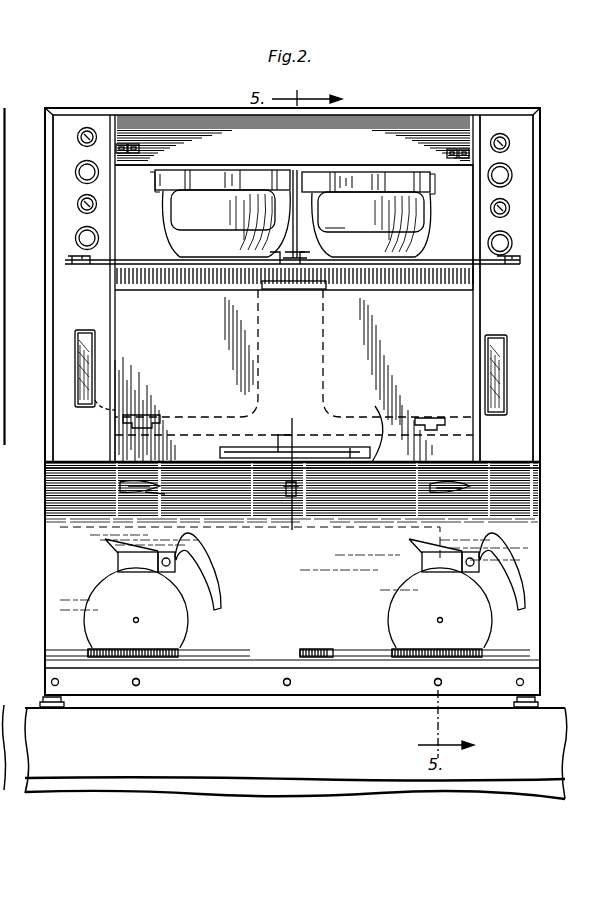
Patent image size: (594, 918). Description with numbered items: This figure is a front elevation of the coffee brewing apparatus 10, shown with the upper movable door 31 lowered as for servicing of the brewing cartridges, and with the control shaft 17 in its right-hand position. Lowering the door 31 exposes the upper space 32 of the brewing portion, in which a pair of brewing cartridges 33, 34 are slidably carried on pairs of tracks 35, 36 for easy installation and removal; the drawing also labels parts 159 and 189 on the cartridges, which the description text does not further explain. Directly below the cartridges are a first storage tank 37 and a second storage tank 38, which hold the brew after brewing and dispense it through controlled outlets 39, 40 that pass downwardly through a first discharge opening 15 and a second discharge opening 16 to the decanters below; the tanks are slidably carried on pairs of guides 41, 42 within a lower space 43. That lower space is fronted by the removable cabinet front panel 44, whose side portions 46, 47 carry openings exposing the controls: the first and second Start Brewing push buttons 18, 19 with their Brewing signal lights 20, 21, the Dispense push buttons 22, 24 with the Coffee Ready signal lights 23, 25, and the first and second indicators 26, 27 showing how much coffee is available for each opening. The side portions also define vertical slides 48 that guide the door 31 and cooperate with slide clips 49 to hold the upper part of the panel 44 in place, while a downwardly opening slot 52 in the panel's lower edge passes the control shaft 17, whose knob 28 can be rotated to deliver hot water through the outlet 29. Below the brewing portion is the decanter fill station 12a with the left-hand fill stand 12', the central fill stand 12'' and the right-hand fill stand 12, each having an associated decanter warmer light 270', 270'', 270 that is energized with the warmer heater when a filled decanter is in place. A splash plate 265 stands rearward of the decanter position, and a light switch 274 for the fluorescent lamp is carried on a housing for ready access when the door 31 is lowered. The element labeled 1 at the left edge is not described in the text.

The adjacent machine 1 is at (7, 433).
The coffee brewing apparatus 10 is at (546, 265).
The fill stand 12 is at (292, 672).
The left-hand fill stand 12' is at (158, 636).
The central fill stand 12'' is at (323, 634).
The decanter fill station 12a is at (468, 680).
The first discharge opening 15 is at (155, 489).
The second discharge opening 16 is at (0, 488).
The control shaft 17 is at (367, 462).
The first Start Brewing push button 18 is at (74, 176).
The second Start Brewing push button 19 is at (511, 174).
The Brewing signal light 20 is at (77, 145).
The second Brewing signal light 21 is at (509, 143).
The Dispense push button 22 is at (74, 241).
The Coffee Ready signal light 23 is at (76, 208).
The second Dispense push button 24 is at (514, 243).
The second Coffee Ready signal light 25 is at (512, 210).
The first indicator 26 is at (85, 408).
The second indicator 27 is at (0, 359).
The knob 28 is at (366, 429).
The outlet 29 is at (288, 495).
The movable door 31 is at (180, 291).
The upper space 32 is at (452, 209).
The brewing cartridge 33 is at (166, 205).
The second brewing cartridge 34 is at (404, 234).
The pair of tracks 35 is at (156, 190).
The pair of tracks 36 is at (292, 170).
The first storage tank 37 is at (259, 348).
The second storage tank 38 is at (322, 326).
The controlled outlet 39 is at (158, 415).
The controlled outlet 40 is at (418, 418).
The pair of guides 41 is at (80, 265).
The pair of guides 42 is at (272, 264).
The lower space 43 is at (308, 403).
The cabinet front panel 44 is at (508, 440).
The side portion 46 is at (68, 122).
The side portion 47 is at (3, 122).
The vertical slides 48 is at (116, 131).
The slide clips 49 is at (130, 145).
The downwardly opening slot 52 is at (307, 448).
The basket rim insert 159 is at (360, 176).
The basket liner 189 is at (348, 232).
The splash plate 265 is at (346, 566).
The decanter warmer light 270 is at (402, 712).
The signal light 270' is at (155, 714).
The signal light 270'' is at (271, 714).
The light switch 274 is at (448, 284).